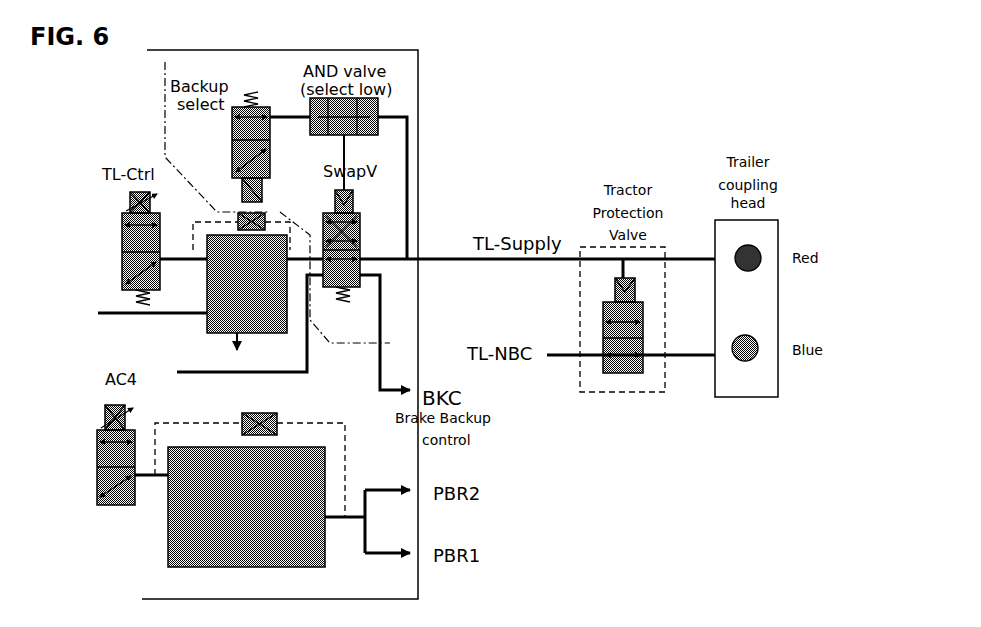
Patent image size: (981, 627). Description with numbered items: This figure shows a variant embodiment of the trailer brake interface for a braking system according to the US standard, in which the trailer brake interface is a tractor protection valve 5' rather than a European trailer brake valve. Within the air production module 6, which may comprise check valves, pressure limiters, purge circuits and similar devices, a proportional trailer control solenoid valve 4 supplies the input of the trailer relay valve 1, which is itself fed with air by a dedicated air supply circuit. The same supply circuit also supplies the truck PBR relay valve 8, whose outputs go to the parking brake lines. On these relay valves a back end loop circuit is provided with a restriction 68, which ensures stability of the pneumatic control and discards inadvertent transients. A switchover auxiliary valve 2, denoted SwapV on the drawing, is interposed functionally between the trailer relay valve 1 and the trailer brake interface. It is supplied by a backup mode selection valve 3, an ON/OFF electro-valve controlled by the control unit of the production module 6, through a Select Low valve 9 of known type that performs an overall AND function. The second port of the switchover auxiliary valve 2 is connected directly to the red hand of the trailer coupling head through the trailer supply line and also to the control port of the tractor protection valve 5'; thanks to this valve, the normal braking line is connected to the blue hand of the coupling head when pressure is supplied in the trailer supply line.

The trailer relay valve 1 is at (202, 333).
The switchover auxiliary valve 2 is at (365, 232).
The backup mode selection valve 3 is at (230, 127).
The proportional trailer control solenoid valve 4 is at (166, 232).
The tractor protection valve 5' is at (622, 345).
The air production module 6 is at (206, 47).
The restriction 68 is at (262, 413).
The truck PBR relay valve 8 is at (298, 446).
The Select Low valve 9 is at (304, 94).